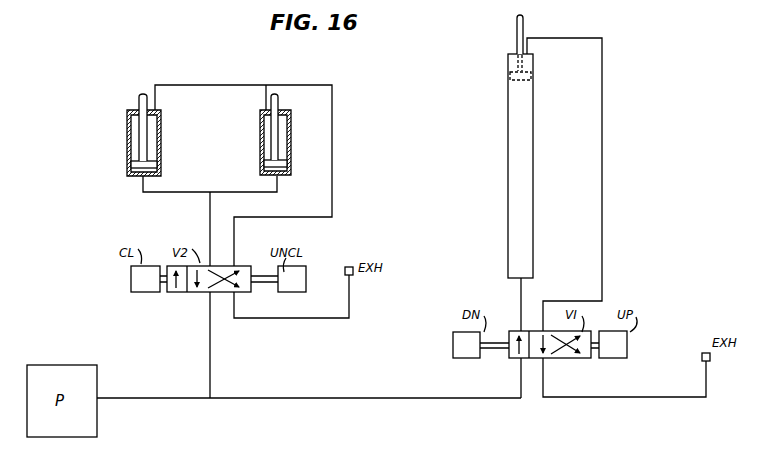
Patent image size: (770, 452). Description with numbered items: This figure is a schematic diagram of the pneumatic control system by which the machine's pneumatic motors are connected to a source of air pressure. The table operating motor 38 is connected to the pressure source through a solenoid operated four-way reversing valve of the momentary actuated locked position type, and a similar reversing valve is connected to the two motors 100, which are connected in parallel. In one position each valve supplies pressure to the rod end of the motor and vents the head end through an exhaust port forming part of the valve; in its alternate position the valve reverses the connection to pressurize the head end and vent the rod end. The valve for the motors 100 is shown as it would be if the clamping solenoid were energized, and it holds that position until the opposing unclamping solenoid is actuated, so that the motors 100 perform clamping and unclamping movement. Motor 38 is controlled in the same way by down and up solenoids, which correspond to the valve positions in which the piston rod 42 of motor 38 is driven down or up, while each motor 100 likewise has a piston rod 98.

The table operating motor 38 is at (508, 268).
The piston rod 42 is at (517, 38).
The piston rod 98 is at (139, 105).
The motors 100 is at (128, 150).